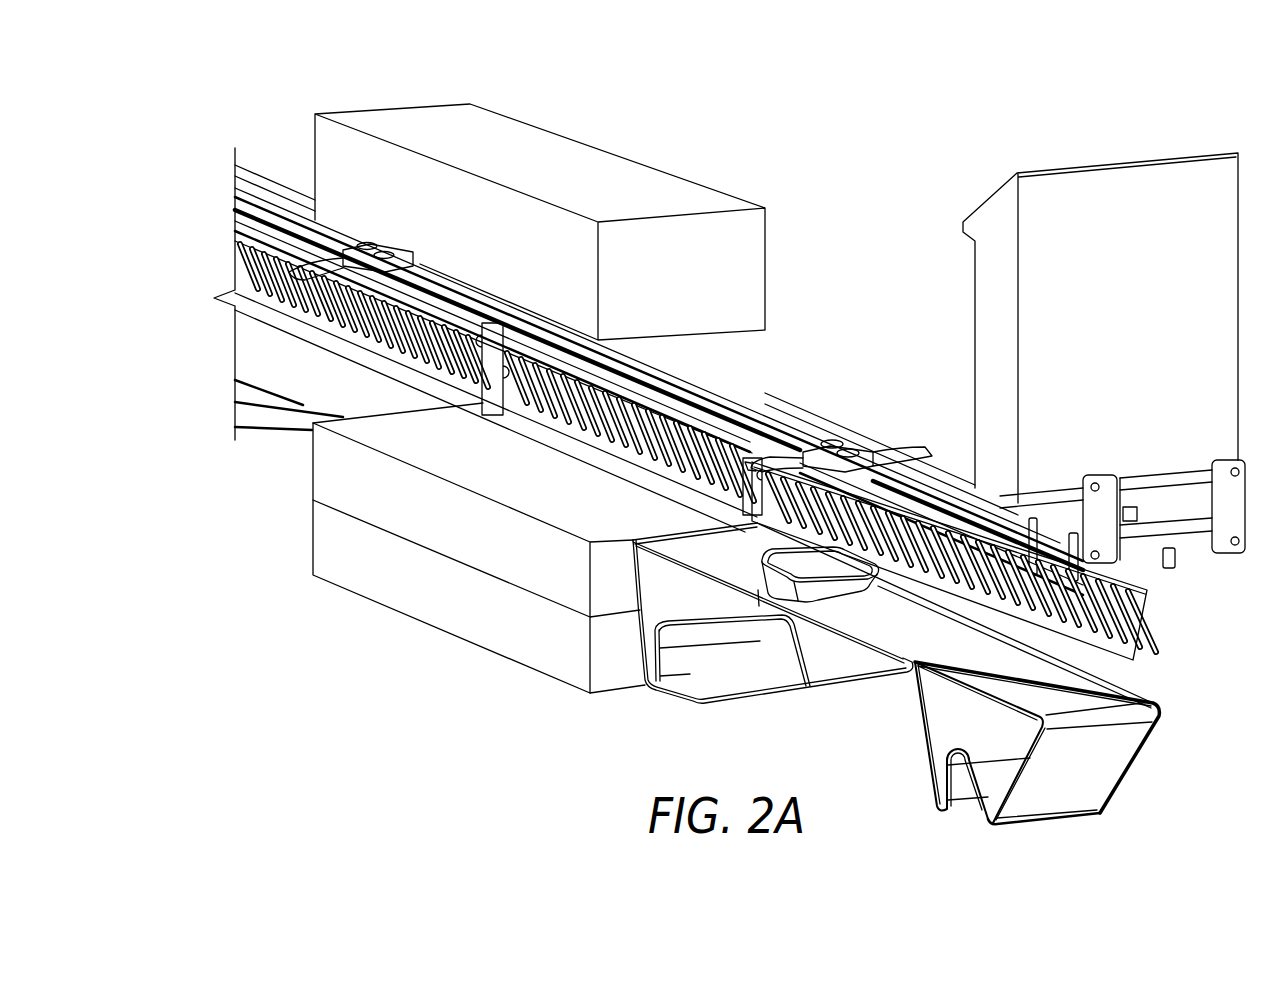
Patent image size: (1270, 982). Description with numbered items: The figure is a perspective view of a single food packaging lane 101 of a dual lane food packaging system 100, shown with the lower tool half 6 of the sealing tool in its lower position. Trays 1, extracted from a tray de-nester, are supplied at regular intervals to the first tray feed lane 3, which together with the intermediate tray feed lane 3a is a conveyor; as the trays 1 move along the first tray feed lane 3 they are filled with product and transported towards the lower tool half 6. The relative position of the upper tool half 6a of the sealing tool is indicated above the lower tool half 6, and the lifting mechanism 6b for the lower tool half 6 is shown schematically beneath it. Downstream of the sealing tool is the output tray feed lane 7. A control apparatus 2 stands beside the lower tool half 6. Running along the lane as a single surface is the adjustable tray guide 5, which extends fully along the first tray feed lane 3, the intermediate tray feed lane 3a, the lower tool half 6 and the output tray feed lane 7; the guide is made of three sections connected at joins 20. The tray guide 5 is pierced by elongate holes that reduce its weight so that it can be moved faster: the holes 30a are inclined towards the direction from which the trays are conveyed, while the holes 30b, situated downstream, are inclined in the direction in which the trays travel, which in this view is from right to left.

The dual lane food packaging system 100 is at (1208, 128).
The food packaging lane 101 is at (1132, 795).
The tray 1 is at (786, 580).
The control apparatus 2 is at (985, 295).
The first tray feed lane 3 is at (1113, 698).
The intermediate tray feed lane 3a is at (887, 630).
The adjustable tray guide 5 is at (756, 446).
The lower tool half 6 is at (454, 558).
The upper tool half 6a is at (610, 160).
The lifting mechanism 6b is at (323, 533).
The output tray feed lane 7 is at (297, 375).
The join 20 is at (489, 402).
The hole 30a is at (702, 428).
The hole 30b is at (622, 402).